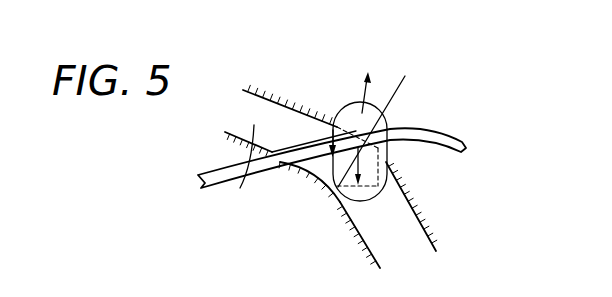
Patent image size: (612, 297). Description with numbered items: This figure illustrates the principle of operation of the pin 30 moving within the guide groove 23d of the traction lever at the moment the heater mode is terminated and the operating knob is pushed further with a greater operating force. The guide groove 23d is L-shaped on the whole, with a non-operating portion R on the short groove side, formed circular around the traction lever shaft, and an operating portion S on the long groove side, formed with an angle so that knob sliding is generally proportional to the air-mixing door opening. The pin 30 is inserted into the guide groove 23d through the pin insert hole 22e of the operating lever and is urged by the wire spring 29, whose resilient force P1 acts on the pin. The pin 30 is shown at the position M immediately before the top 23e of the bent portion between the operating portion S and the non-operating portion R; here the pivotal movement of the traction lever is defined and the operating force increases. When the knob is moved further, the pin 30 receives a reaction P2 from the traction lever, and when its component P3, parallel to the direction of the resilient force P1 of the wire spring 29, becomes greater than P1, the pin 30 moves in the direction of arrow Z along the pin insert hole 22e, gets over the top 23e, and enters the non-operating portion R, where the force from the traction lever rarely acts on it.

The wire spring 29 is at (442, 129).
The pin insert hole 22e is at (392, 118).
The top of the bent portion 23e is at (322, 186).
The guide groove 23d is at (413, 208).
The pin 30 is at (383, 186).
The operating portion S is at (400, 246).
The non-operating portion R is at (238, 173).
The position M is at (345, 208).
The arrow Z is at (369, 78).
The resilient force P1 is at (378, 158).
The reaction P2 is at (380, 115).
The reaction P3 is at (331, 150).